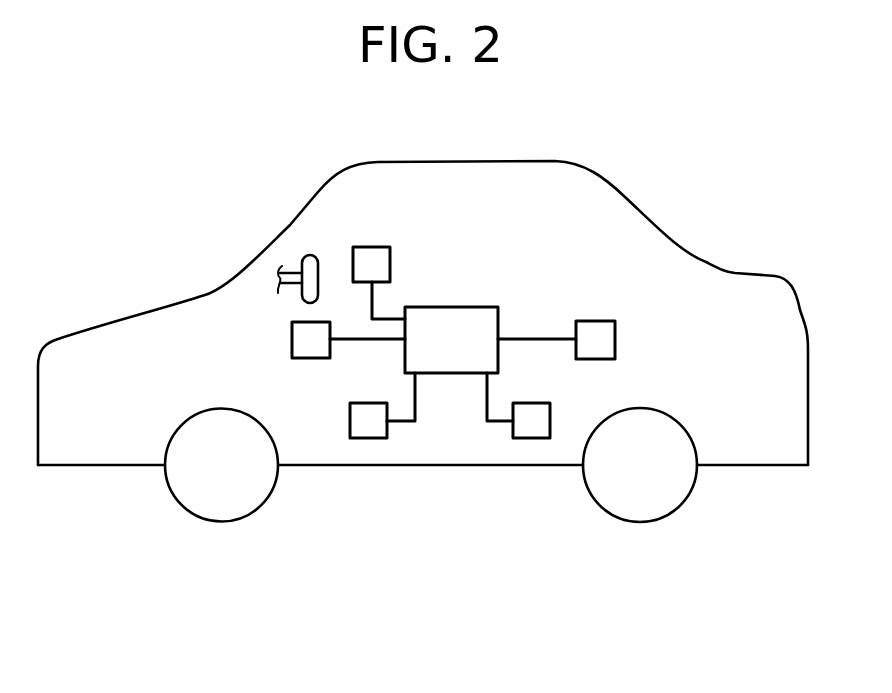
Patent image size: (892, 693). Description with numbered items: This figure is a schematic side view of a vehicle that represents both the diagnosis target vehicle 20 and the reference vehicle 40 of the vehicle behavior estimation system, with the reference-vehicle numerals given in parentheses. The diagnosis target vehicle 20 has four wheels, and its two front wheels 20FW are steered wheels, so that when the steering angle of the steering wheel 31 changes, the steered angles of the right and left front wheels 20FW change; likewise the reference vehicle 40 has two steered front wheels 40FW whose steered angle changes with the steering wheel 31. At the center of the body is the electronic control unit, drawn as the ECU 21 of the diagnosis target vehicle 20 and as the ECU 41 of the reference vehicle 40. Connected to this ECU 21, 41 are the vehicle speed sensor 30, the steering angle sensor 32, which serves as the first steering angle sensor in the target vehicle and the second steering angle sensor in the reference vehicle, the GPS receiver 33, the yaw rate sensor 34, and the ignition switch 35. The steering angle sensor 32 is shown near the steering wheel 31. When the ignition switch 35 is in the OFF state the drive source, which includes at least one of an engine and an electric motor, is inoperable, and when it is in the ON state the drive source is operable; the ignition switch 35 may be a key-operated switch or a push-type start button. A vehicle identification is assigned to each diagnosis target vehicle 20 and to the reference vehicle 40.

The diagnosis target vehicle 20 is at (435, 332).
The reference vehicle 40 is at (700, 209).
The front wheels 20FW is at (217, 522).
The steered wheels (front wheels) 40FW is at (207, 512).
The electronic control unit (ECU) 21 is at (471, 301).
The ECU 41 is at (465, 306).
The vehicle speed sensor 30 is at (616, 338).
The steering wheel 31 is at (310, 254).
The steering angle sensor 32 is at (371, 246).
The GPS receiver 33 is at (374, 402).
The yaw rate sensor 34 is at (552, 416).
The ignition switch 35 is at (306, 361).